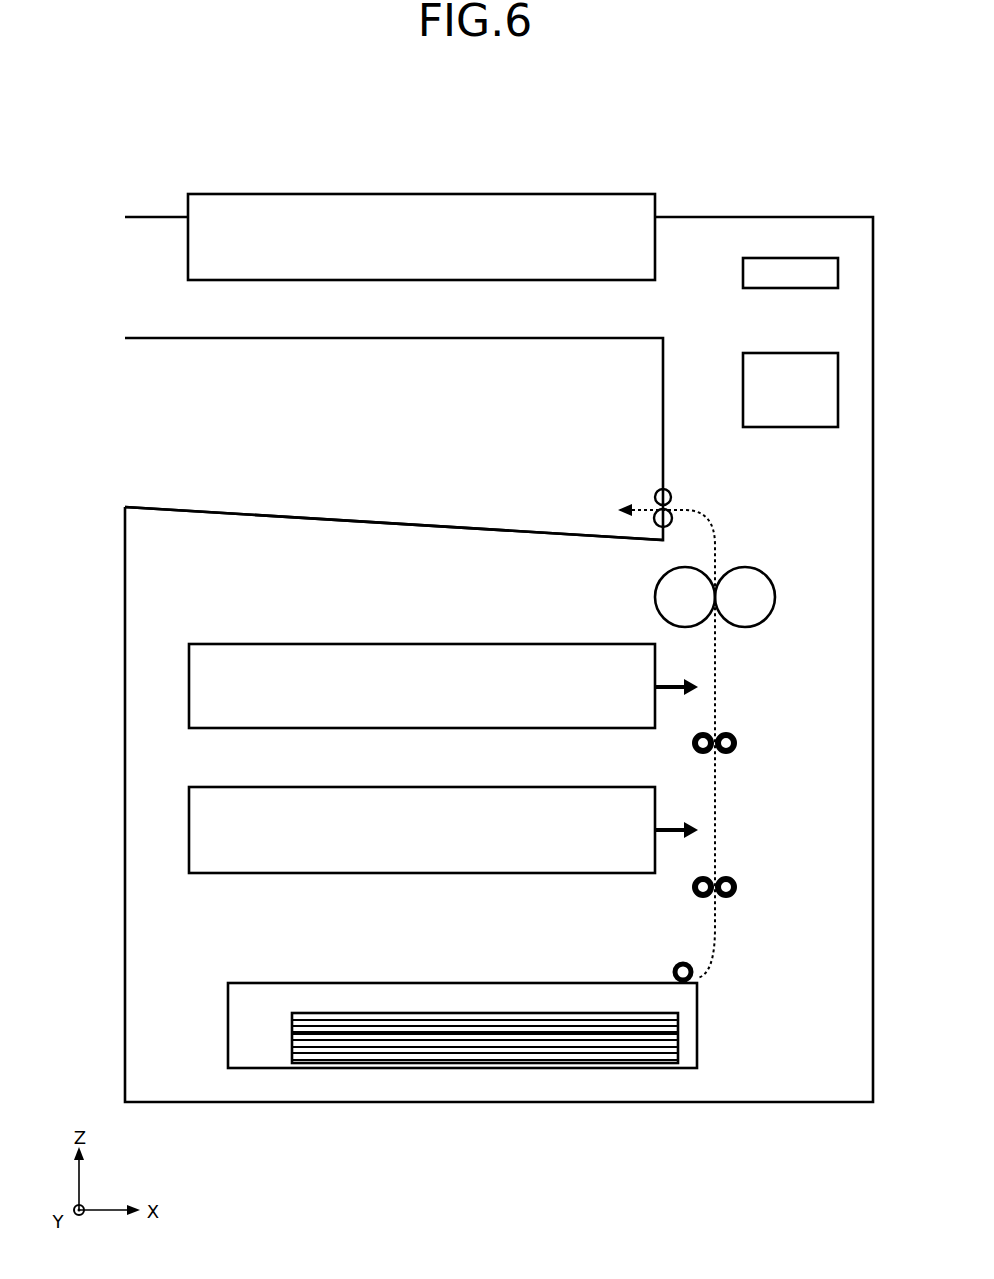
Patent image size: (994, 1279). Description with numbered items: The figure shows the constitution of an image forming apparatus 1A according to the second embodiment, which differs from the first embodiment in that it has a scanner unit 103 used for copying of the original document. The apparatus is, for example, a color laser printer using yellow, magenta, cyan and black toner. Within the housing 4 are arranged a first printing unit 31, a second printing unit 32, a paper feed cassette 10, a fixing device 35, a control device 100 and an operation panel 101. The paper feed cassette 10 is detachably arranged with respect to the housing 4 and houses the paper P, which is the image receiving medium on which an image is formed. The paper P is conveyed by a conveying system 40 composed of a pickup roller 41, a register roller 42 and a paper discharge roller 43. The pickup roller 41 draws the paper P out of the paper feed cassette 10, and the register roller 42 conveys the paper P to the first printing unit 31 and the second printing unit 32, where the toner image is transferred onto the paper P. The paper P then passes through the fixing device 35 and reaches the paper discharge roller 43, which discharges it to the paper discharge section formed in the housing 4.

The image forming apparatus 1A is at (799, 152).
The scanner unit 103 is at (622, 192).
The operation panel 101 is at (812, 257).
The control device 100 is at (813, 352).
The housing 4 is at (198, 507).
The paper discharge roller 43 is at (656, 490).
The fixing device 35 is at (656, 597).
The first printing unit 31 is at (188, 690).
The second printing unit 32 is at (188, 834).
The conveying system 40 is at (803, 718).
The register roller 42 is at (738, 745).
The pickup roller 41 is at (678, 963).
The paper feed cassette 10 is at (226, 1043).
The paper P is at (680, 1035).